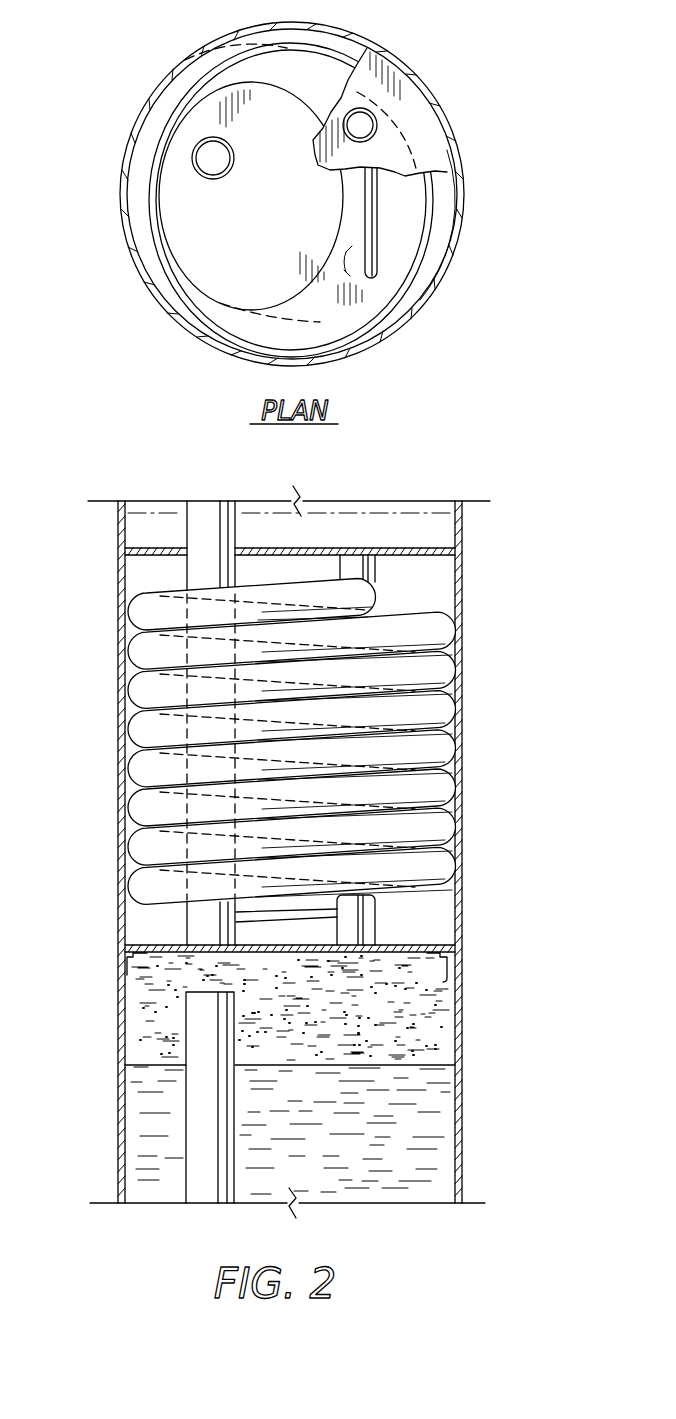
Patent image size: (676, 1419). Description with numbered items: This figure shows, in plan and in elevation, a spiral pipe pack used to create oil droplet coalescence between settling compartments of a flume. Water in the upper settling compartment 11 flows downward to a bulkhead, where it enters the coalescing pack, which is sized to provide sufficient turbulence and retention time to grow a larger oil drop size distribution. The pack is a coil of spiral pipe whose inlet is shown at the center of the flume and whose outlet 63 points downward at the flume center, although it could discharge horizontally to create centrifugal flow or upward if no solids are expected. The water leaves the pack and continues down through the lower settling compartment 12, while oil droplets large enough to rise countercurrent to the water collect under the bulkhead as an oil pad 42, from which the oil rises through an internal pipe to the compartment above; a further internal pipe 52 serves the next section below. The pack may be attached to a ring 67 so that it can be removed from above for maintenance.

The settling compartment 11 is at (137, 528).
The settling compartment 12 is at (432, 1135).
The oil pad 42 is at (437, 1017).
The internal pipe 52 is at (225, 1110).
The outlet of the pipe 63 is at (357, 953).
The ring 67 is at (446, 959).